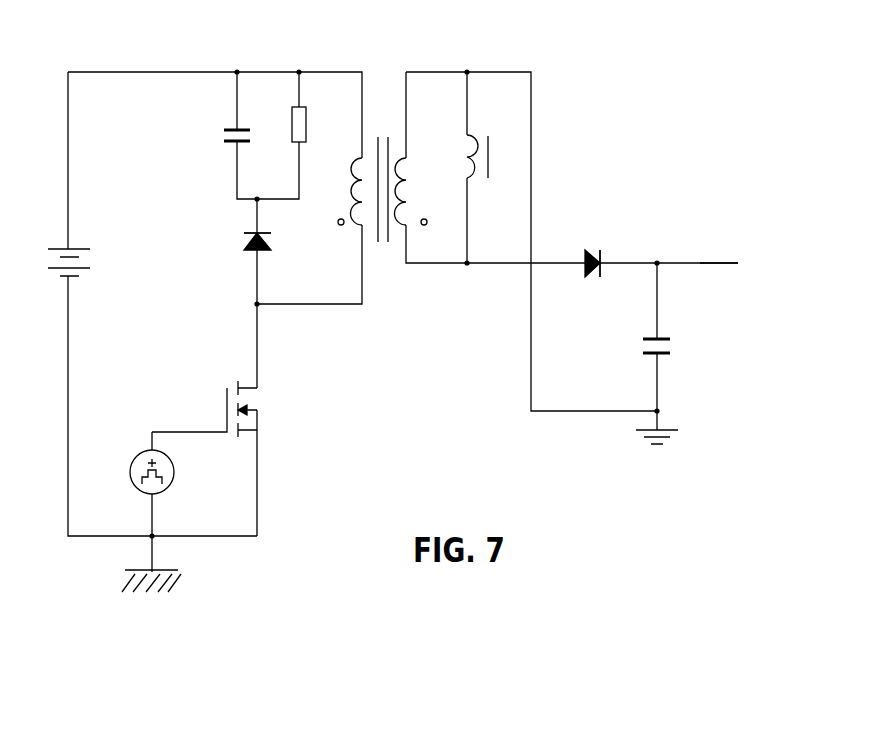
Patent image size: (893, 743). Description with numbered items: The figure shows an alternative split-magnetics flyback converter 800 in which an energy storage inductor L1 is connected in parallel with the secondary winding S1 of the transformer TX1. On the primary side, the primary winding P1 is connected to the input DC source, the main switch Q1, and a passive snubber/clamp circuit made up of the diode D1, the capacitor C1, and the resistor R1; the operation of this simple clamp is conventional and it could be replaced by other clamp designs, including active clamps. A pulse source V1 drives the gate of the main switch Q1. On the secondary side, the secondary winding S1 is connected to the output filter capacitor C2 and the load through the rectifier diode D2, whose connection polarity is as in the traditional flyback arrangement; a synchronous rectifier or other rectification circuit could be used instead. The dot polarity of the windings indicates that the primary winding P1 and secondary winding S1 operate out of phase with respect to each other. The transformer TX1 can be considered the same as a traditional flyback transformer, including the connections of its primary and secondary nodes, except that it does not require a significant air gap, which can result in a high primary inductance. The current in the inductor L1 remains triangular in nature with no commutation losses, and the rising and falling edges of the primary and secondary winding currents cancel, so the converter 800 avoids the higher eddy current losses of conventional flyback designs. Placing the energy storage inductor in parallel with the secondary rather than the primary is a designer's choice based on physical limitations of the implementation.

The flyback converter 800 is at (431, 303).
The capacitor C1 is at (247, 128).
The resistor R1 is at (309, 119).
The diode D1 is at (244, 236).
The transformer TX1 is at (378, 171).
The primary winding P1 is at (342, 191).
The secondary winding S1 is at (414, 191).
The energy storage inductor L1 is at (488, 149).
The rectifier diode D2 is at (592, 255).
The output filter capacitor C2 is at (666, 340).
The main switch Q1 is at (204, 421).
The pulse voltage source V1 is at (139, 472).